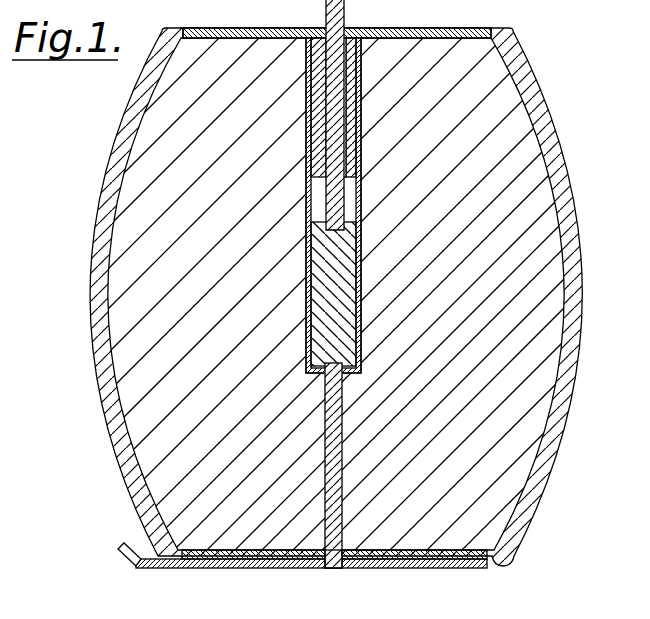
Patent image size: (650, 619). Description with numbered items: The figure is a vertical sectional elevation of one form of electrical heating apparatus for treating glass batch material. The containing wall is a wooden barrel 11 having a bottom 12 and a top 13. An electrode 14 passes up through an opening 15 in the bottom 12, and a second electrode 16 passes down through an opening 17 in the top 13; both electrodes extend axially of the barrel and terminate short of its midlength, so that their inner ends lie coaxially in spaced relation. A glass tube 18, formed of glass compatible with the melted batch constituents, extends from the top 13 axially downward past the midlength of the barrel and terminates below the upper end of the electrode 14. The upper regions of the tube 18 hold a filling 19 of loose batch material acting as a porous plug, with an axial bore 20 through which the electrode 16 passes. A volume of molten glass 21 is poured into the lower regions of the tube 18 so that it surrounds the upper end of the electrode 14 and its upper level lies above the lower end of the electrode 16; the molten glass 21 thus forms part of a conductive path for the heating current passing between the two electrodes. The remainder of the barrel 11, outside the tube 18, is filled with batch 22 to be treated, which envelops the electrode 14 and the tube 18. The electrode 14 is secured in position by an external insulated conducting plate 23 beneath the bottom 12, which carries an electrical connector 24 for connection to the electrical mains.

The wooden barrel 11 is at (102, 258).
The bottom 12 is at (227, 556).
The top 13 is at (428, 20).
The electrode 14 is at (333, 517).
The opening 15 is at (317, 570).
The electrode 16 is at (340, 17).
The opening 17 is at (326, 30).
The glass tube 18 is at (307, 200).
The filling of loose batch material 19 is at (348, 88).
The axial bore 20 is at (348, 145).
The molten glass 21 is at (340, 287).
The batch 22 is at (147, 380).
The external insulated conducting plate 23 is at (240, 570).
The electrical connector 24 is at (135, 567).